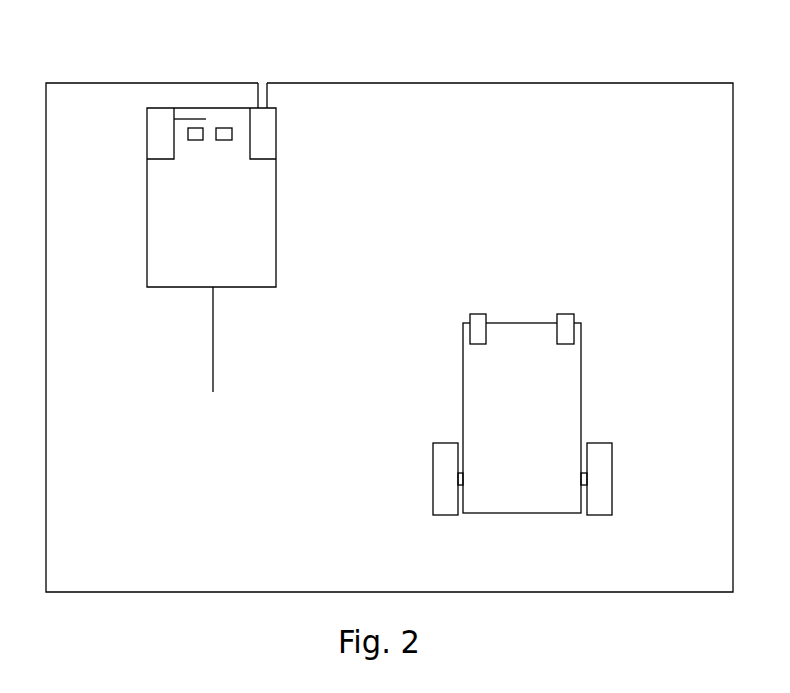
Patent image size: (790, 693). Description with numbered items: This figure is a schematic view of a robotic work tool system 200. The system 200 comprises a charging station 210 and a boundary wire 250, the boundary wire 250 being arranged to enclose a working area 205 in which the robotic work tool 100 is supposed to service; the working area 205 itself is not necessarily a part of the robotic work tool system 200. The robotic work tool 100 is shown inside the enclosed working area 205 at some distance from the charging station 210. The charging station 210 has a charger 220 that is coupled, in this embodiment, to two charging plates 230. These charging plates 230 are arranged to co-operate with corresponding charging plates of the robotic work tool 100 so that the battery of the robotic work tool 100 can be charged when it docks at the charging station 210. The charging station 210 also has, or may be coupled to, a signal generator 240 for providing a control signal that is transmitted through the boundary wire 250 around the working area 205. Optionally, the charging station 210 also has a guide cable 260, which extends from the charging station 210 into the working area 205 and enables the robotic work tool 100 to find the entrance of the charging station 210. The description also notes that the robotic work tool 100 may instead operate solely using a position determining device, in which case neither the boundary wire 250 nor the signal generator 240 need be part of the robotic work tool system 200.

The robotic work tool 100 is at (581, 435).
The robotic work tool system 200 is at (138, 99).
The working area 205 is at (544, 101).
The charging station 210 is at (147, 163).
The charger 220 is at (158, 117).
The charging plates 230 is at (195, 128).
The signal generator 240 is at (277, 146).
The boundary wire 250 is at (680, 83).
The guide cable 260 is at (213, 372).